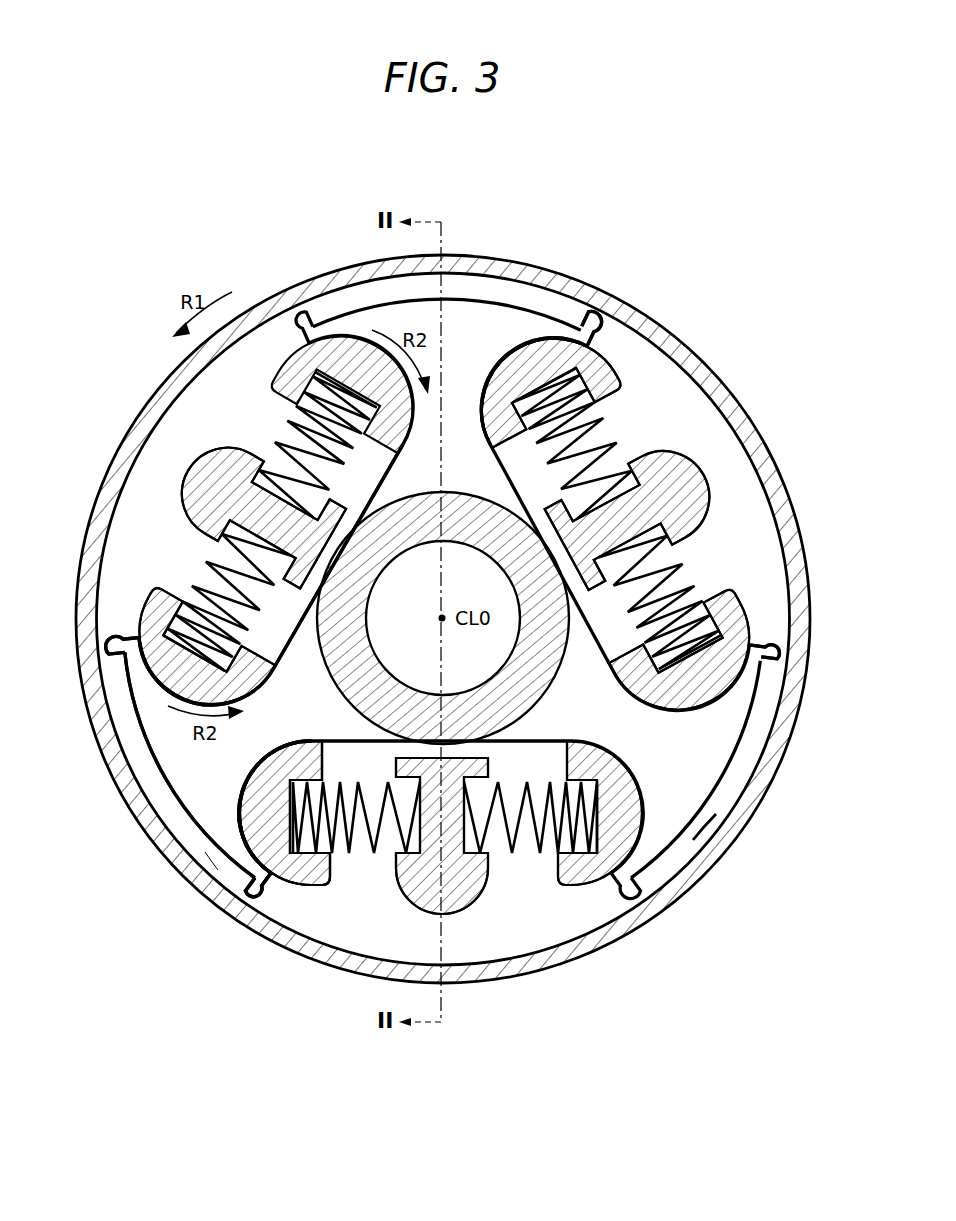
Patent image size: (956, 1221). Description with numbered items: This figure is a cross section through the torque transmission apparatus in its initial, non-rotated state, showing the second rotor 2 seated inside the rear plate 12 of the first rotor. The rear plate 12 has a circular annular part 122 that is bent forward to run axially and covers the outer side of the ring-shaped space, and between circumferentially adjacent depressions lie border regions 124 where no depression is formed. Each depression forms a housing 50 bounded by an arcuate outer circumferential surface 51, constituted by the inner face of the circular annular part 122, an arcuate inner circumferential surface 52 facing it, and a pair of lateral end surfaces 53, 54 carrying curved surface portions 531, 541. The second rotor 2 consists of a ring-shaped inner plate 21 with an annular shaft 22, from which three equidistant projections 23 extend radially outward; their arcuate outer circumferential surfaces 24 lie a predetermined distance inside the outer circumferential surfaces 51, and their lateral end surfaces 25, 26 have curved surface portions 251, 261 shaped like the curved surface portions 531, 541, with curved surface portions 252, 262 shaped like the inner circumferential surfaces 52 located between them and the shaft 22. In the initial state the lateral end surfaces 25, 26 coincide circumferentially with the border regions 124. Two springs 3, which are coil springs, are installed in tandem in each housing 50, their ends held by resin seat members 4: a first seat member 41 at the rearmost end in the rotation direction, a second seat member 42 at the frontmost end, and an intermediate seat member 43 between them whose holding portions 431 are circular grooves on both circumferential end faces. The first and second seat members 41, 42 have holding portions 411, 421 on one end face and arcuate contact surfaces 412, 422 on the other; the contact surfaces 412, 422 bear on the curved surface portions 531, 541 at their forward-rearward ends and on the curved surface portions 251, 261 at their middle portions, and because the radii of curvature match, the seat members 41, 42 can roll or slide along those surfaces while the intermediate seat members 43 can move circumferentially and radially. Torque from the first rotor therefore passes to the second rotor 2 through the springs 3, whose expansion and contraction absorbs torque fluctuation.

The second rotor 2 is at (667, 853).
The springs 3 is at (368, 835).
The seat members 4 is at (299, 895).
The rear plate 12 is at (723, 857).
The inner plate 21 is at (700, 807).
The annular shaft 22 is at (527, 699).
The projections 23 is at (393, 318).
The outer circumferential surfaces 24 is at (200, 852).
The lateral end surface 25 is at (222, 875).
The lateral end surface 26 is at (150, 775).
The first seat members 41 is at (308, 338).
The second seat members 42 is at (587, 336).
The intermediate seat members 43 is at (190, 467).
The housings 50 is at (690, 417).
The outer circumferential surface 51 is at (396, 920).
The inner circumferential surface 52 is at (293, 440).
The lateral end surface 53 is at (290, 880).
The lateral end surface 54 is at (142, 617).
The circular annular part 122 is at (655, 345).
The border regions 124 is at (212, 858).
The curved surface portion 251 is at (305, 888).
The curved surface portion 252 is at (373, 478).
The curved surface portion 261 is at (160, 600).
The curved surface portion 262 is at (268, 640).
The holding portion 411 is at (703, 607).
The contact surface 412 is at (740, 795).
The holding portion 421 is at (572, 392).
The contact surface 422 is at (520, 350).
The holding portions 431 is at (620, 487).
The curved surface portion 531 is at (745, 742).
The curved surface portion 541 is at (572, 372).